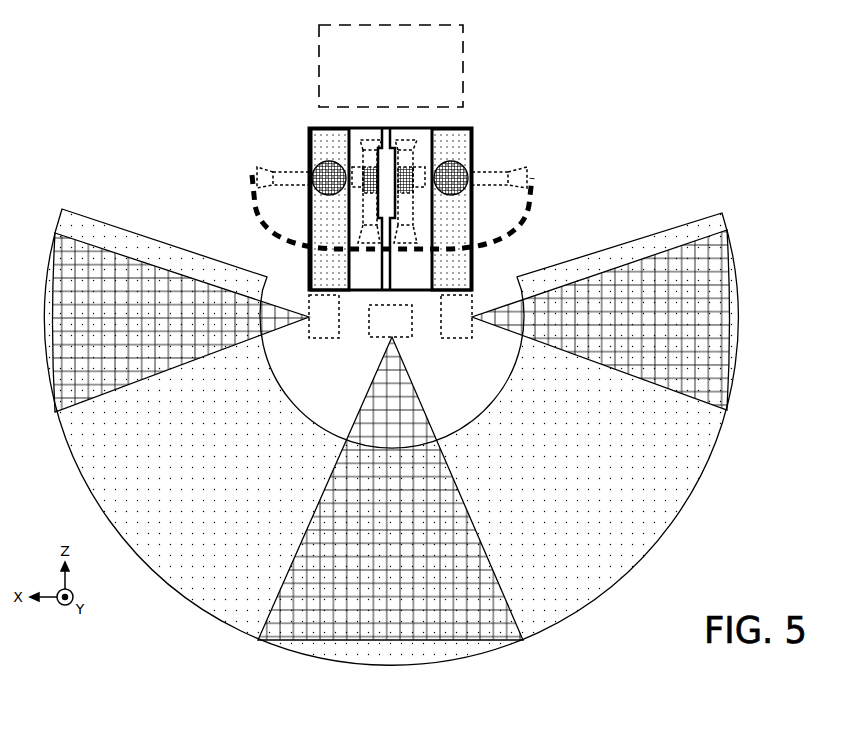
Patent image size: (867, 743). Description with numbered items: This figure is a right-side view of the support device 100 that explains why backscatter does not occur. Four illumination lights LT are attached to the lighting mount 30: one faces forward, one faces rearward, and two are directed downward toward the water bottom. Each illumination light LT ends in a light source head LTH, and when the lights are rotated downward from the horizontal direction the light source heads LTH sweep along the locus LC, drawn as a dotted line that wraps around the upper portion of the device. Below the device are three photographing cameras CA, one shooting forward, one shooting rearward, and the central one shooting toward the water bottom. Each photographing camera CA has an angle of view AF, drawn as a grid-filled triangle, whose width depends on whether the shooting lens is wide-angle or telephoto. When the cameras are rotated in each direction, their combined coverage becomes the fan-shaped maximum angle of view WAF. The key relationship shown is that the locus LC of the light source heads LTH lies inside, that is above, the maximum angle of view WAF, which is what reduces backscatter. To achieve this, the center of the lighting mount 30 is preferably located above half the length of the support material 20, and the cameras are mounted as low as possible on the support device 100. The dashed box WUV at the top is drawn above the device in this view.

The support device 100 is at (554, 117).
The support material 20 is at (318, 235).
The lighting mount 30 is at (320, 156).
The illumination light LT is at (333, 128).
The light source head LTH is at (258, 177).
The locus of the light source head LC is at (262, 215).
The photographing camera CA is at (325, 315).
The angle of view AF is at (72, 408).
The maximum angle of view WAF is at (665, 533).
The wave unit WUV is at (391, 66).